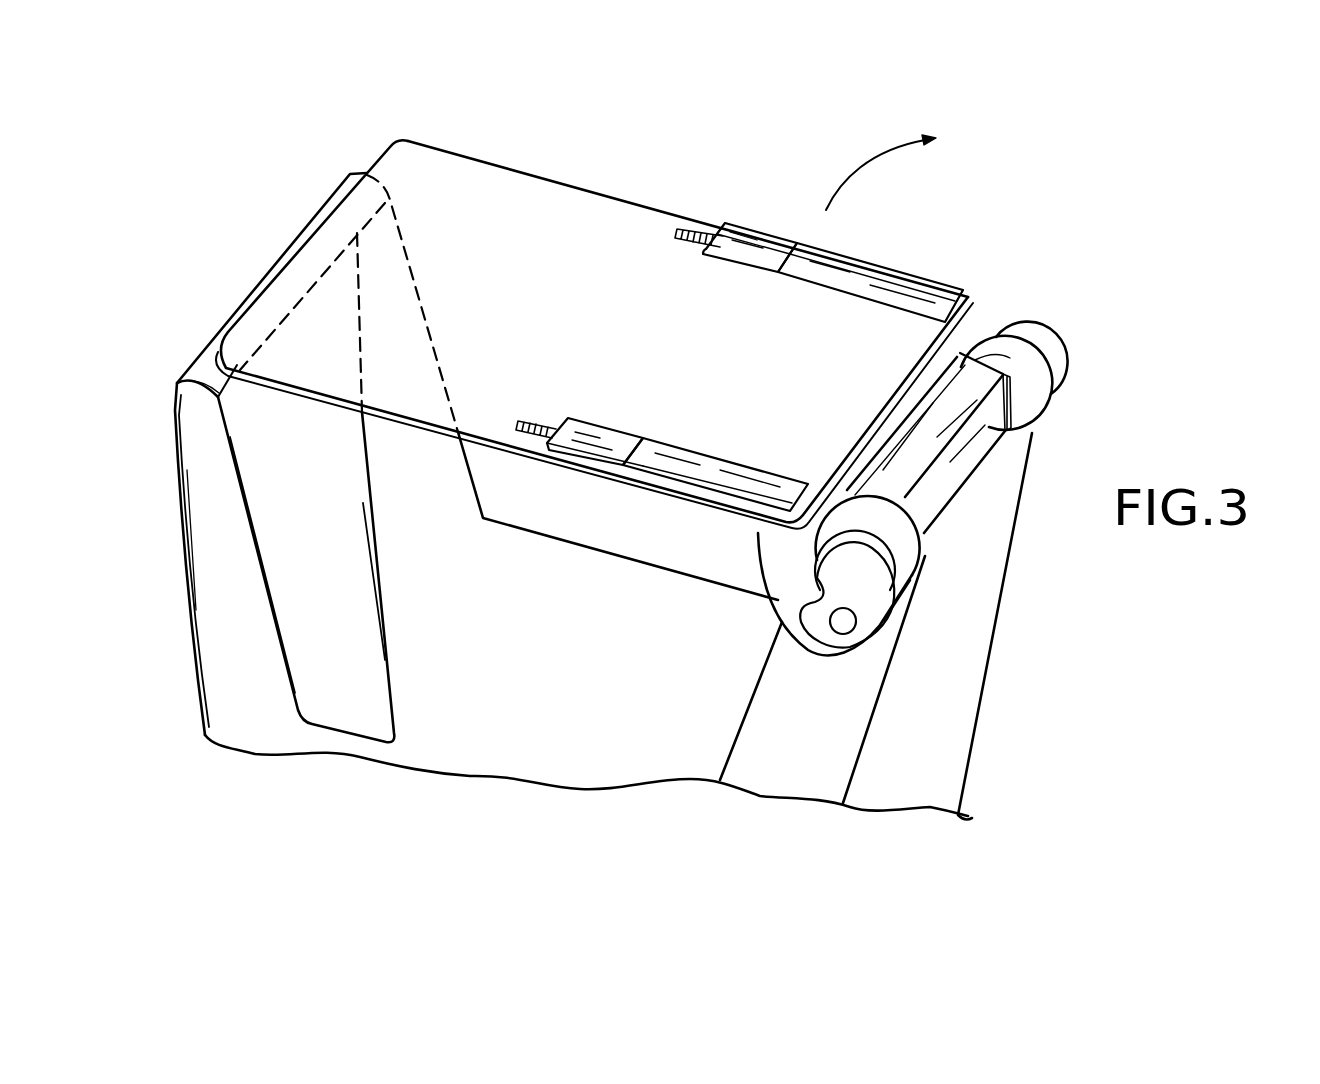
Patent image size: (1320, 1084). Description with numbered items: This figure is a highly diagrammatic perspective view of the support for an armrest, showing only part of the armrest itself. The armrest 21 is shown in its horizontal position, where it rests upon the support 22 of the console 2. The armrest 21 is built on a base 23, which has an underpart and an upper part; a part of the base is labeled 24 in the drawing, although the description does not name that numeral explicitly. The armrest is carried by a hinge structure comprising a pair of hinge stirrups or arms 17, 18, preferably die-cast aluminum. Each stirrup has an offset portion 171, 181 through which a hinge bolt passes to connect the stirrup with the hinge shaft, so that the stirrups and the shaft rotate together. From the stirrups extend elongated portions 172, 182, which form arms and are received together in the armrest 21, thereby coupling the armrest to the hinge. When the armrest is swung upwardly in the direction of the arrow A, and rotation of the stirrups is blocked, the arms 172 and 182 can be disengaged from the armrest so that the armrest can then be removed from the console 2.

The console 2 is at (973, 647).
The hinge stirrup 17 is at (714, 528).
The offset portion 171 is at (797, 582).
The elongated portion 172 is at (675, 465).
The hinge stirrup 18 is at (947, 376).
The offset portion 181 is at (1042, 335).
The elongated portion 182 is at (848, 275).
The armrest 21 is at (815, 215).
The support 22 is at (207, 362).
The base 23 is at (458, 146).
The top plate 24 is at (527, 196).
The arrow A is at (862, 163).